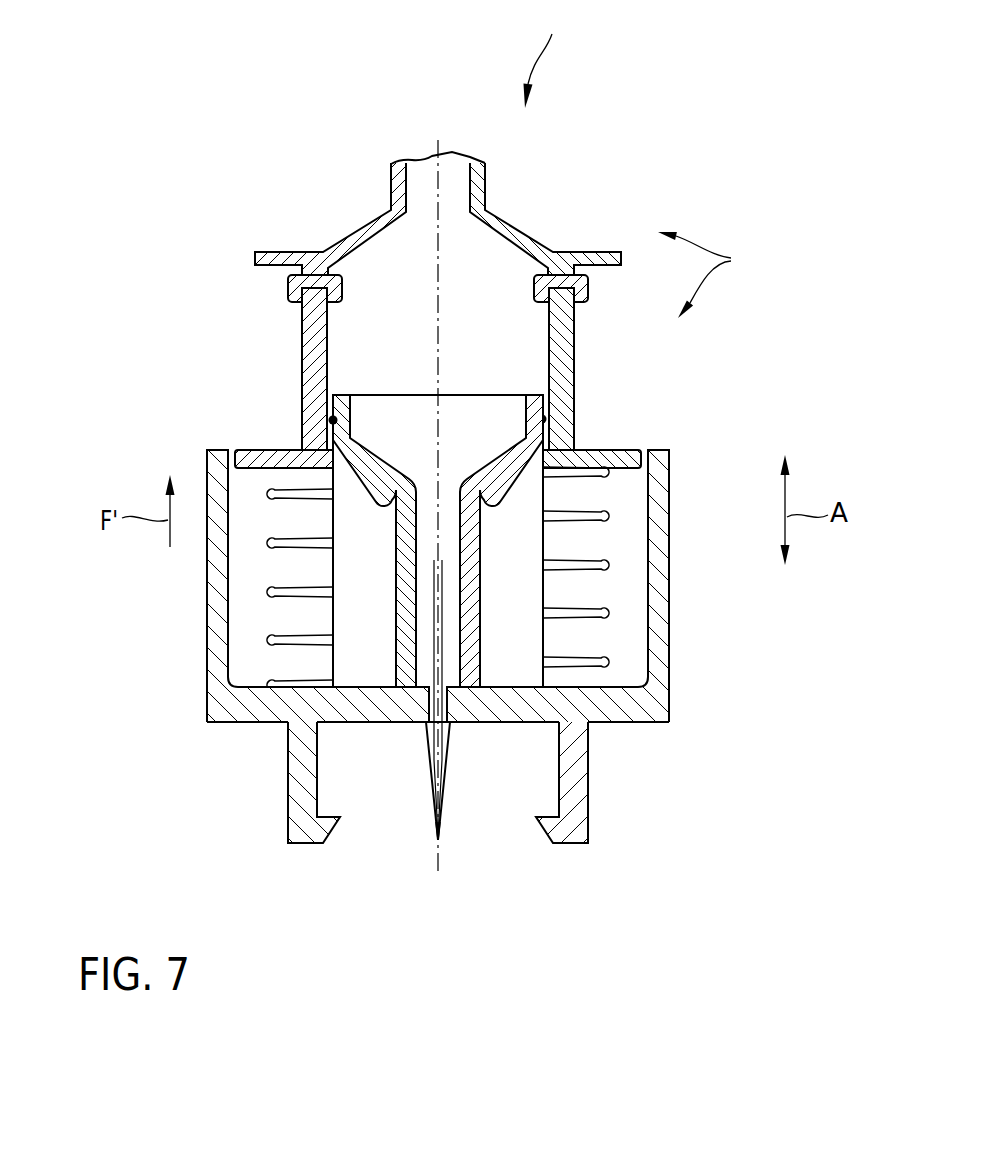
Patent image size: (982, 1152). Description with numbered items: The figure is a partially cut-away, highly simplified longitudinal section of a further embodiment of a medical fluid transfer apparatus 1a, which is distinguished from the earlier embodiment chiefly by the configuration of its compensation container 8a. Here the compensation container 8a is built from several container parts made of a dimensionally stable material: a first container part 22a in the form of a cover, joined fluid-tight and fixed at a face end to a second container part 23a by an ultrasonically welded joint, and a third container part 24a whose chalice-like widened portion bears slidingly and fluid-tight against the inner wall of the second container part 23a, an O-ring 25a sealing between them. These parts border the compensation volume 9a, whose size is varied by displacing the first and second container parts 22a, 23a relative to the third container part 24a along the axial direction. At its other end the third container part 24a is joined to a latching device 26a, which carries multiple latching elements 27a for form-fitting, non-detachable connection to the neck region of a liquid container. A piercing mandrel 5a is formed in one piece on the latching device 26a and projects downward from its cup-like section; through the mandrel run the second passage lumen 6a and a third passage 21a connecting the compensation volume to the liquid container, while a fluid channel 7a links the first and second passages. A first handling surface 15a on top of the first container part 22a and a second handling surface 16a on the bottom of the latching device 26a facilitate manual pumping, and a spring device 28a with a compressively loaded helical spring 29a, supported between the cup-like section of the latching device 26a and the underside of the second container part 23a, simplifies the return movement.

The fluid transfer apparatus 1a is at (545, 57).
The piercing mandrel 5a is at (436, 813).
The lumen 6a is at (430, 758).
The fluid channel 7a is at (444, 272).
The compensation container 8a is at (732, 275).
The compensation volume 9a is at (352, 348).
The first handling surface 15a is at (297, 248).
The second handling surface 16a is at (637, 722).
The third passage 21a is at (450, 768).
The first container part 22a is at (366, 220).
The second container part 23a is at (566, 413).
The third container part 24a is at (410, 553).
The O-ring 25a is at (329, 420).
The latching device 26a is at (207, 723).
The latching elements 27a is at (288, 845).
The spring device 28a is at (640, 546).
The helical spring 29a is at (612, 663).